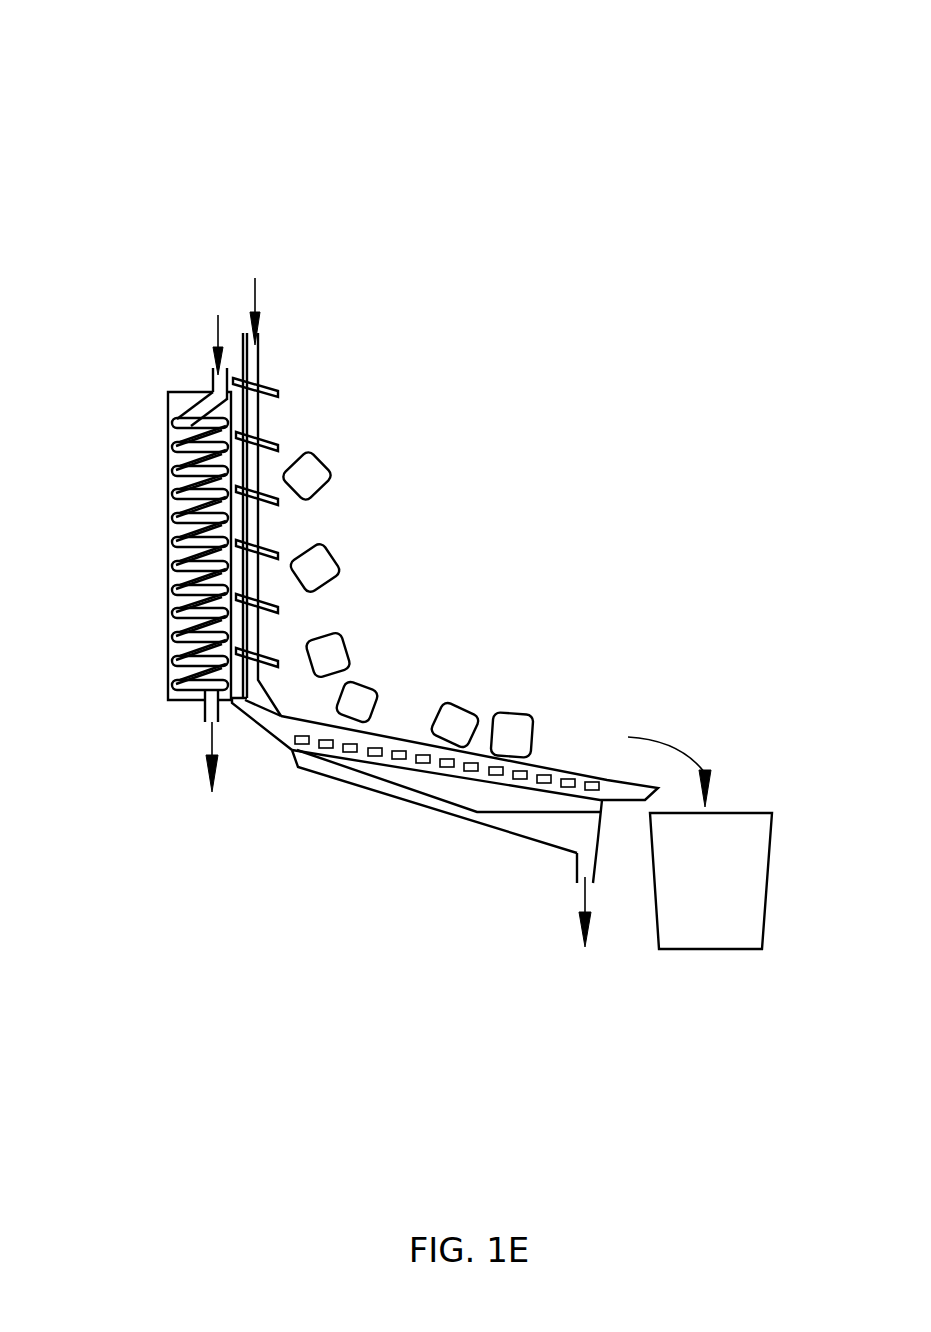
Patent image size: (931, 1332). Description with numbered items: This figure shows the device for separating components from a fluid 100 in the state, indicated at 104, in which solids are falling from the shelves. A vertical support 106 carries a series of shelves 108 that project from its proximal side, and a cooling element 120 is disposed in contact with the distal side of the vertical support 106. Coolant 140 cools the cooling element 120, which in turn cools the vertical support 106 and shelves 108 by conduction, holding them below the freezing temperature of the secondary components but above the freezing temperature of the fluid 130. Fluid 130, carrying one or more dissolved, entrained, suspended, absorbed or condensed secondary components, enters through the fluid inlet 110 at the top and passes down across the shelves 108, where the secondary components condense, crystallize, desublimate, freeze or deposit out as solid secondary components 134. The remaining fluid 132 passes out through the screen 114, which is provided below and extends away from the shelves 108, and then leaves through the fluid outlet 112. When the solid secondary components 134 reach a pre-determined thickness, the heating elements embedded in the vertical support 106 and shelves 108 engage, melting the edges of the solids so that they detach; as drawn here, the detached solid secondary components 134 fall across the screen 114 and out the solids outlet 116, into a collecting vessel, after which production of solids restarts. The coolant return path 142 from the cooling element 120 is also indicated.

The device for separating components from a fluid 100 is at (589, 932).
The device with solids falling from the shelves 104 is at (130, 74).
The vertical support 106 is at (238, 526).
The shelves 108 is at (283, 444).
The fluid inlet 110 is at (302, 536).
The fluid outlet 112 is at (577, 864).
The screen 114 is at (398, 737).
The solids outlet 116 is at (773, 812).
The cooling element 120 is at (168, 396).
The fluid 130 is at (260, 296).
The fluid 132 is at (560, 838).
The solid secondary components 134 is at (511, 718).
The coolant 140 is at (209, 356).
The coolant outlet 142 is at (211, 757).